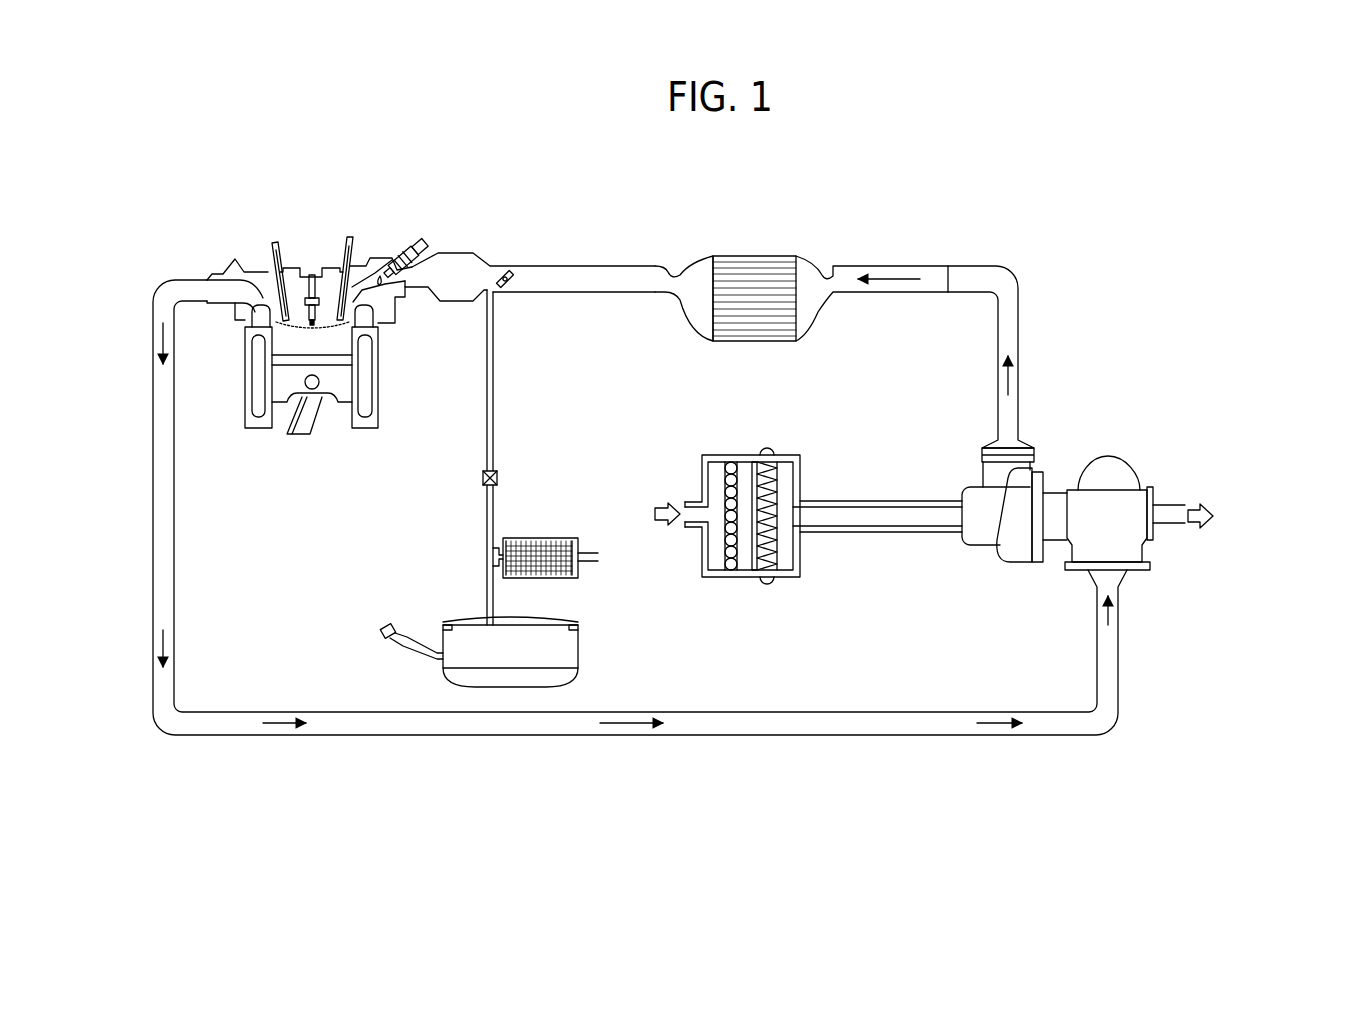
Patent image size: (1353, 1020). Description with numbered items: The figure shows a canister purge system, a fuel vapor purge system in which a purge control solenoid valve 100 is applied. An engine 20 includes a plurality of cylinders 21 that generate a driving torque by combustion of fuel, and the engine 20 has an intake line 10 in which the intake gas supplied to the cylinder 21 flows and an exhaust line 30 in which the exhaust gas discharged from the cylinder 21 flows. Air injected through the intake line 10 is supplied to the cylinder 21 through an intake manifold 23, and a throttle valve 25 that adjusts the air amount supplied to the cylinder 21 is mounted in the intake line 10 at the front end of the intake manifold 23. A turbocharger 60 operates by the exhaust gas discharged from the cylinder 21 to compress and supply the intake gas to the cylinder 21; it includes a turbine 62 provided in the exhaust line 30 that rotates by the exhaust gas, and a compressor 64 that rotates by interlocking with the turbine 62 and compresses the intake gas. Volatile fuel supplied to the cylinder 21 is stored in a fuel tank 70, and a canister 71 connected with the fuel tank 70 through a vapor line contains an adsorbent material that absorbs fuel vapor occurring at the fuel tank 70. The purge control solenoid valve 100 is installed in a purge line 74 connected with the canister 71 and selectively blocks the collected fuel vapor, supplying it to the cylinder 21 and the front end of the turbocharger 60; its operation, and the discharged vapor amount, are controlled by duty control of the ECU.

The intake line 10 is at (890, 293).
The engine 20 is at (311, 389).
The cylinder 21 is at (245, 378).
The intake manifold 23 is at (457, 252).
The throttle valve 25 is at (505, 266).
The exhaust line 30 is at (750, 736).
The turbocharger 60 is at (1111, 465).
The turbine 62 is at (1072, 396).
The compressor 64 is at (1040, 470).
The fuel tank 70 is at (578, 650).
The canister 71 is at (540, 537).
The purge line 74 is at (493, 393).
The purge control solenoid valve 100 is at (482, 478).